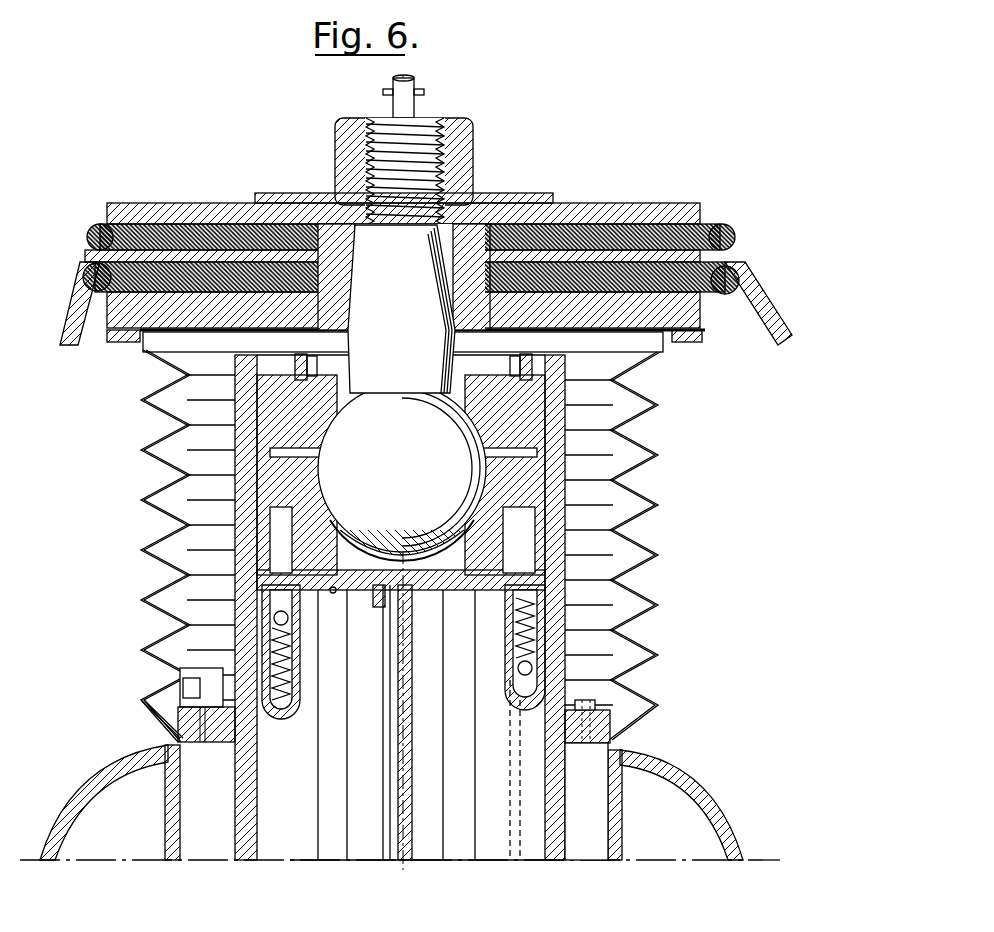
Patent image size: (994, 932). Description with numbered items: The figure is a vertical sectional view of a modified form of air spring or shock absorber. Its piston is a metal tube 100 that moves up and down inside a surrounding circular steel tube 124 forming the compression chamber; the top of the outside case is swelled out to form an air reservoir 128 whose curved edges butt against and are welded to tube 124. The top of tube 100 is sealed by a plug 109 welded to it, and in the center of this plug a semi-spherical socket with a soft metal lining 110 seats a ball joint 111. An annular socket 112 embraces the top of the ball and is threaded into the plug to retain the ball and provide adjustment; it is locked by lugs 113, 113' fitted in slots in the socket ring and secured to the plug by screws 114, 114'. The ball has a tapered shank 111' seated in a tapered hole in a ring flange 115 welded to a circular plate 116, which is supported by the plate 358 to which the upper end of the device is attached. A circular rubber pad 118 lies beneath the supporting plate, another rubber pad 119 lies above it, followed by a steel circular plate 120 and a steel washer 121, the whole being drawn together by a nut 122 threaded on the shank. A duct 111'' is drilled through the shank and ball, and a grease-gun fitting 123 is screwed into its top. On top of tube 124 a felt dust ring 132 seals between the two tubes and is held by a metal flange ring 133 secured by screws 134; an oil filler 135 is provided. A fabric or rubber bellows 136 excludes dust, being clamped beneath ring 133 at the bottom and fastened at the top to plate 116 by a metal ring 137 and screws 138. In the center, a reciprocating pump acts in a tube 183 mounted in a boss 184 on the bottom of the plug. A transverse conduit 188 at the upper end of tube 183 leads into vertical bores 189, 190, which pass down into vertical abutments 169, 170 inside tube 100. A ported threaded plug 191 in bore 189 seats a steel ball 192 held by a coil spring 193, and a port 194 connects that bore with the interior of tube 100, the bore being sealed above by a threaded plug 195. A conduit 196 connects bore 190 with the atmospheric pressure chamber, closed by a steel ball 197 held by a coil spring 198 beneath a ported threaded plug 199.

The metal tube 100 is at (255, 858).
The plug 109 is at (650, 500).
The soft metal lining 110 is at (470, 478).
The ball joint 111 is at (402, 468).
The tapered shank 111' is at (401, 309).
The duct 111'' is at (377, 296).
The annular socket 112 is at (492, 428).
The lug 113 is at (517, 354).
The lug 113' is at (312, 354).
The screw 114 is at (403, 340).
The screw 114' is at (205, 340).
The ring flange 115 is at (335, 215).
The circular plate 116 is at (700, 335).
The circular rubber pad 118 is at (88, 266).
The circular rubber pad 119 is at (730, 232).
The steel circular plate 120 is at (660, 222).
The steel washer 121 is at (540, 205).
The nut 122 is at (478, 152).
The grease-gun fitting 123 is at (418, 102).
The circular steel tube 124 is at (170, 855).
The air reservoir 128 is at (103, 841).
The felt dust ring 132 is at (585, 750).
The metal flange ring 133 is at (615, 727).
The screws 134 is at (610, 700).
The oil filler 135 is at (175, 685).
The bellows 136 is at (150, 490).
The metal ring 137 is at (90, 340).
The screws 138 is at (125, 345).
The vertical abutment 169 is at (320, 750).
The vertical abutment 170 is at (470, 850).
The tube 183 is at (380, 855).
The boss 184 is at (425, 600).
The transverse conduit 188 is at (385, 545).
The vertical bore 189 is at (275, 545).
The vertical bore 190 is at (540, 545).
The threaded plug 191 is at (258, 588).
The steel ball 192 is at (252, 615).
The coil spring 193 is at (252, 650).
The port 194 is at (333, 593).
The threaded plug 195 is at (235, 505).
The conduit 196 is at (512, 768).
The steel ball 197 is at (565, 657).
The coil spring 198 is at (565, 622).
The threaded plug 199 is at (565, 592).
The plate 358 is at (758, 302).